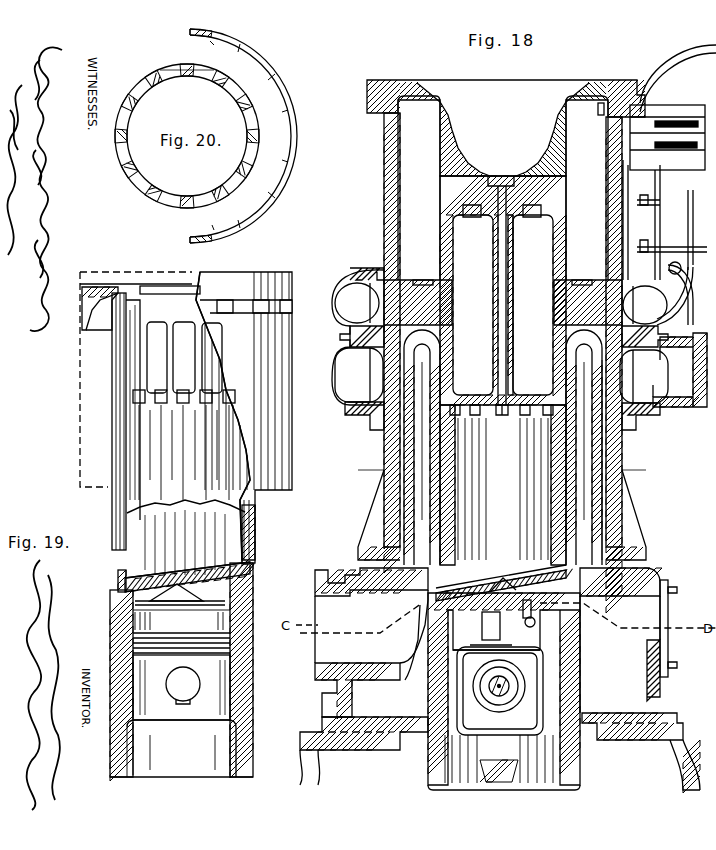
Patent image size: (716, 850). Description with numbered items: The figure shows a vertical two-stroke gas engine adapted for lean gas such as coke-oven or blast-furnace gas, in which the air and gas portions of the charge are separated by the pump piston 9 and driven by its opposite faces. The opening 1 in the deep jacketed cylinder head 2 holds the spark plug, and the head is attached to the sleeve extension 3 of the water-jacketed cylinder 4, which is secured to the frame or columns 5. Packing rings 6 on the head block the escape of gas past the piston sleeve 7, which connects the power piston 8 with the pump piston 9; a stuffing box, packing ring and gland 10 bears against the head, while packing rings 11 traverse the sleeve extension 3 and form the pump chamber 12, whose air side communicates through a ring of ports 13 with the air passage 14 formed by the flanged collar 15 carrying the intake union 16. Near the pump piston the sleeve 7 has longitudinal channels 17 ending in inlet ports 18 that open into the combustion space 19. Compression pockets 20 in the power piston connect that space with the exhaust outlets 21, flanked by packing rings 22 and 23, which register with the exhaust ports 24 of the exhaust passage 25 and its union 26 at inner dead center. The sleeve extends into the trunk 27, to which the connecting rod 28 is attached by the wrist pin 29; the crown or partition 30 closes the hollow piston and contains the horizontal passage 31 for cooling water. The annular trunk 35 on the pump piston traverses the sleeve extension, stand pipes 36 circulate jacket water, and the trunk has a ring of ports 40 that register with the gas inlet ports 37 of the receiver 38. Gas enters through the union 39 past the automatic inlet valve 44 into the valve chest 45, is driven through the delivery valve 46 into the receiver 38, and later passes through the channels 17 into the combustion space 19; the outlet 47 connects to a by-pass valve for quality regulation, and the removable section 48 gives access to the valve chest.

In FIG. 18, the opening for the atomizing valve 1 is at (502, 173).
In FIG. 18, the cylinder head 2 is at (405, 80).
In FIG. 18, the sleeve extension 3 is at (384, 193).
In FIG. 18, the water-jacketed cylinder 4 is at (650, 570).
In FIG. 18, the frame or columns 5 is at (680, 772).
In FIG. 18, the packing rings 6 is at (558, 375).
In FIG. 20, the piston sleeve 7 is at (238, 173).
In FIG. 19, the piston sleeve 7 is at (252, 590).
In FIG. 18, the piston sleeve 7 is at (560, 458).
In FIG. 19, the power piston 8 is at (183, 578).
In FIG. 18, the power piston 8 is at (501, 578).
In FIG. 19, the pump piston 9 is at (107, 305).
In FIG. 18, the pump piston 9 is at (562, 305).
In FIG. 18, the stuffing box, packing ring and gland 10 is at (566, 285).
In FIG. 19, the packing rings 11 is at (190, 280).
In FIG. 18, the packing rings 11 is at (404, 279).
In FIG. 18, the pump chamber 12 is at (503, 188).
In FIG. 18, the air inlet ports 13 is at (380, 352).
In FIG. 18, the air passage 14 is at (501, 404).
In FIG. 18, the flanged collar 15 is at (342, 320).
In FIG. 18, the intake union 16 is at (697, 420).
In FIG. 20, the channels or passages 17 is at (258, 137).
In FIG. 19, the channels or passages 17 is at (184, 357).
In FIG. 20, the inlet ports 18 is at (190, 71).
In FIG. 19, the inlet ports 18 is at (118, 392).
In FIG. 18, the inlet ports 18 is at (527, 412).
In FIG. 18, the combustion space 19 is at (503, 489).
In FIG. 19, the compression pockets 20 is at (140, 578).
In FIG. 18, the compression pockets 20 is at (455, 582).
In FIG. 19, the exhaust outlets 21 is at (118, 580).
In FIG. 18, the exhaust outlets 21 is at (437, 583).
In FIG. 19, the packing ring 22 is at (255, 538).
In FIG. 18, the packing ring 22 is at (592, 545).
In FIG. 19, the packing ring 23 is at (252, 625).
In FIG. 18, the packing ring 23 is at (573, 633).
In FIG. 18, the exhaust ports 24 is at (420, 605).
In FIG. 18, the exhaust passage 25 is at (508, 626).
In FIG. 19, the union 26 is at (318, 668).
In FIG. 18, the union 26 is at (515, 659).
In FIG. 19, the trunk 27 is at (245, 688).
In FIG. 18, the trunk 27 is at (440, 686).
In FIG. 18, the connecting rod 28 is at (499, 715).
In FIG. 18, the wrist pin 29 is at (502, 686).
In FIG. 18, the crown or partition 30 is at (412, 677).
In FIG. 18, the horizontal passage 31 is at (540, 628).
In FIG. 20, the annular trunk 35 is at (293, 162).
In FIG. 18, the annular trunk 35 is at (384, 443).
In FIG. 18, the stand pipes 36 is at (590, 462).
In FIG. 18, the gas inlet ports 37 is at (382, 300).
In FIG. 18, the gas passage or receiver 38 is at (338, 287).
In FIG. 18, the union 39 is at (714, 15).
In FIG. 20, the ports 40 is at (293, 140).
In FIG. 19, the ports 40 is at (292, 307).
In FIG. 18, the ports 40 is at (503, 441).
In FIG. 18, the automatic inlet valve 44 is at (672, 121).
In FIG. 18, the valve chest 45 is at (648, 125).
In FIG. 18, the delivery valve 46 is at (672, 150).
In FIG. 18, the outlet 47 is at (675, 262).
In FIG. 18, the removable section 48 is at (655, 220).